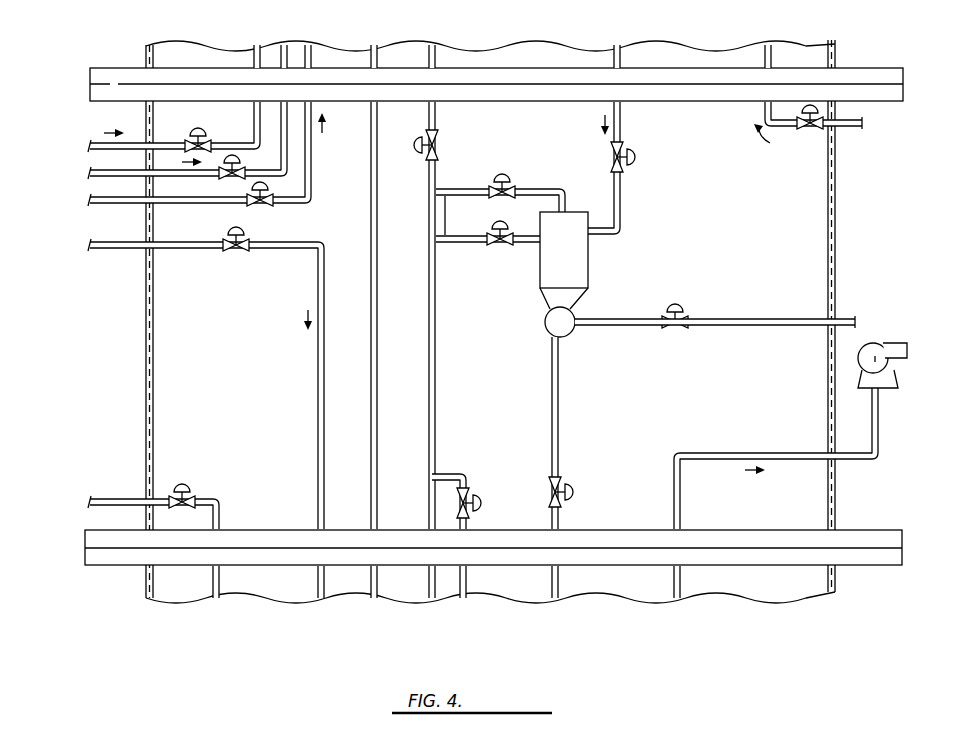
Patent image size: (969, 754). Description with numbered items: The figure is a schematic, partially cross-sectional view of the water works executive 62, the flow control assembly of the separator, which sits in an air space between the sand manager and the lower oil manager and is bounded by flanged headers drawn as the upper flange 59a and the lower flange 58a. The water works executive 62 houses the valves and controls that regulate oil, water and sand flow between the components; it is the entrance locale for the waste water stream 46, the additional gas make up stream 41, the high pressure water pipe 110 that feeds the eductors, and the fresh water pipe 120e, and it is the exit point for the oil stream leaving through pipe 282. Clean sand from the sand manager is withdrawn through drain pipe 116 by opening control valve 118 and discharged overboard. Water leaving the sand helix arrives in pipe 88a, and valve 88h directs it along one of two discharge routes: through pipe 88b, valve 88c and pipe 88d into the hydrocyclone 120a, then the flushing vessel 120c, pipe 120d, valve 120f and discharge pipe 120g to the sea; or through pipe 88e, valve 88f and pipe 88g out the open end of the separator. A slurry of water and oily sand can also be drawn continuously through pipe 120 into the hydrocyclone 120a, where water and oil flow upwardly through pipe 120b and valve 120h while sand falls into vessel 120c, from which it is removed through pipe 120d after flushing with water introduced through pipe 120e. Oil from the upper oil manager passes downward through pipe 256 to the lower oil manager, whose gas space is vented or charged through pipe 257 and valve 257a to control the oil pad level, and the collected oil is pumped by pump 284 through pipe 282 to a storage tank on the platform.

The flange 59a is at (92, 86).
The flange 58a is at (86, 548).
The high pressure water pipe 110 is at (855, 152).
The waste water stream 46 is at (100, 176).
The drain pipe 116 is at (112, 200).
The control valve 118 is at (262, 209).
The additional gas make up stream 41 is at (115, 245).
The water works executive 62 is at (92, 318).
The pipe 257 is at (118, 500).
The valve 257a is at (230, 503).
The pipe 256 is at (379, 383).
The pipe 88a is at (438, 115).
The pipe 88b is at (447, 188).
The valve 88c is at (518, 178).
The pipe 88d is at (541, 192).
The pipe 88e is at (438, 478).
The valve 88f is at (478, 491).
The pipe 88g is at (468, 522).
The valve 88h is at (404, 146).
The pipe 120 is at (645, 148).
The hydrocyclone 120a is at (564, 260).
The pipe 120b is at (444, 245).
The flushing vessel 120c is at (552, 325).
The pipe 120d is at (566, 398).
The pipe 120e is at (761, 316).
The valve 120f is at (578, 491).
The discharge pipe 120g is at (560, 525).
The valve 120h is at (503, 243).
The pipe 282 is at (682, 510).
The pump 284 is at (888, 343).